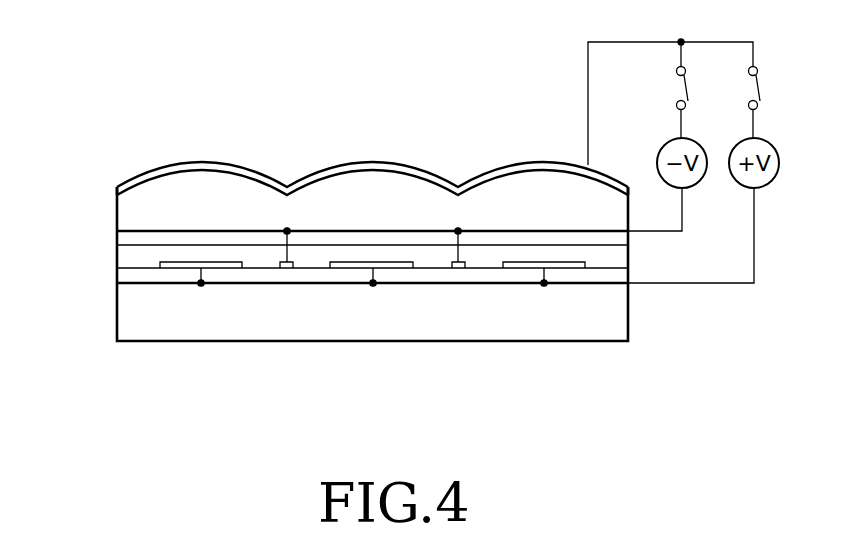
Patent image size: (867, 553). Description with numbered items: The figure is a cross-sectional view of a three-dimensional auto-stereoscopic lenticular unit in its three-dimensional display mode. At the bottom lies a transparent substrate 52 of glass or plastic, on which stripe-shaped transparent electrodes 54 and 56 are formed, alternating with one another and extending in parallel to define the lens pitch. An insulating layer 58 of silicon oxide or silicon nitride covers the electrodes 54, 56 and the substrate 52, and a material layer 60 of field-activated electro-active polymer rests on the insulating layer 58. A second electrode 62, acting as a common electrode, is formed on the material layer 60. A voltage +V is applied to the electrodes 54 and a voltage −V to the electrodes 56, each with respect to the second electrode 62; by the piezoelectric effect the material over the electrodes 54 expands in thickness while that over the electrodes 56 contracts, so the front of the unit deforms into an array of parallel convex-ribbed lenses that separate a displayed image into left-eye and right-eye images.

The transparent substrate 52 is at (207, 318).
The transparent electrodes 54 is at (523, 265).
The transparent electrodes 56 is at (283, 268).
The insulating layer 58 is at (128, 258).
The material layer 60 is at (128, 216).
The second electrode 62 is at (150, 170).